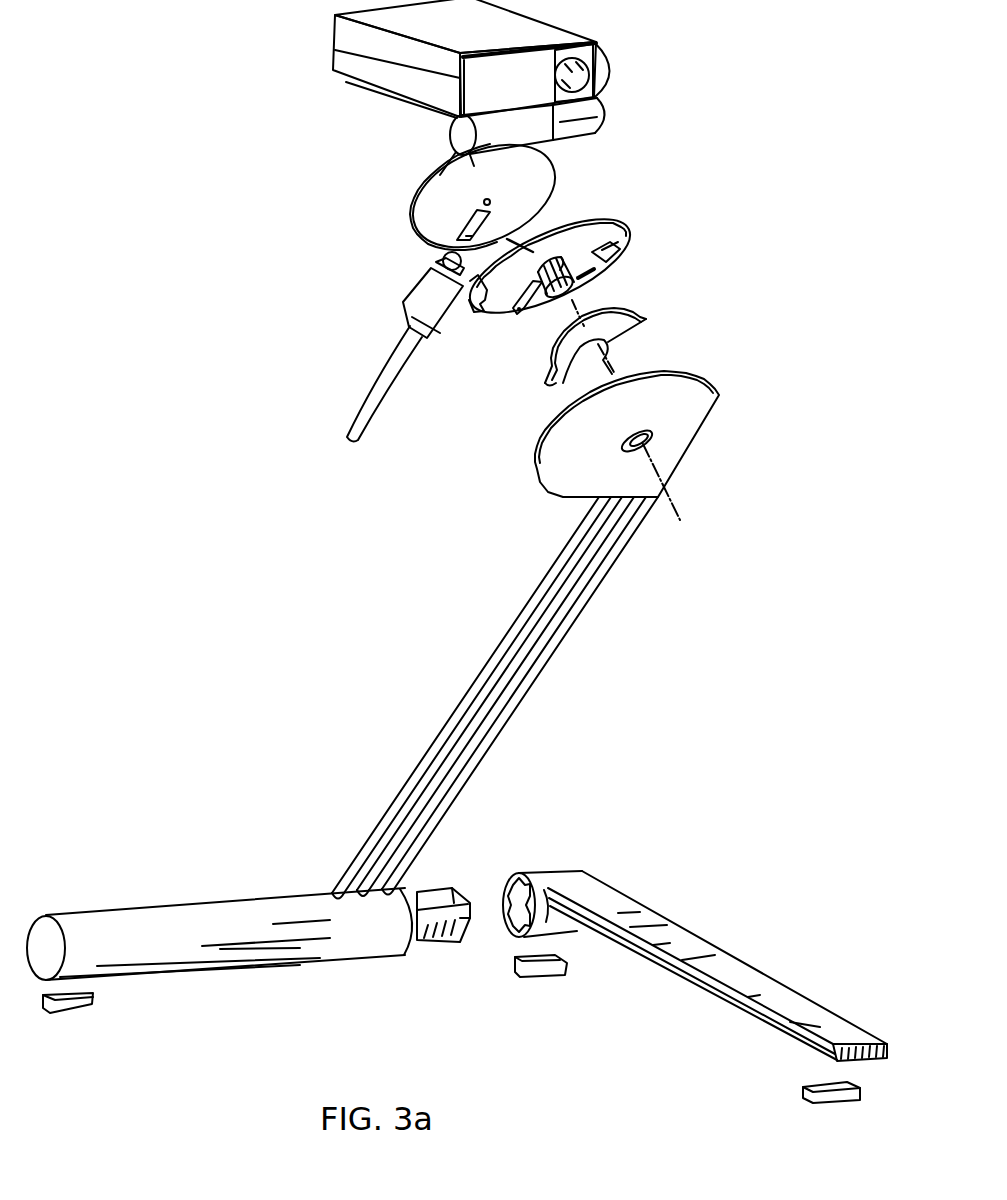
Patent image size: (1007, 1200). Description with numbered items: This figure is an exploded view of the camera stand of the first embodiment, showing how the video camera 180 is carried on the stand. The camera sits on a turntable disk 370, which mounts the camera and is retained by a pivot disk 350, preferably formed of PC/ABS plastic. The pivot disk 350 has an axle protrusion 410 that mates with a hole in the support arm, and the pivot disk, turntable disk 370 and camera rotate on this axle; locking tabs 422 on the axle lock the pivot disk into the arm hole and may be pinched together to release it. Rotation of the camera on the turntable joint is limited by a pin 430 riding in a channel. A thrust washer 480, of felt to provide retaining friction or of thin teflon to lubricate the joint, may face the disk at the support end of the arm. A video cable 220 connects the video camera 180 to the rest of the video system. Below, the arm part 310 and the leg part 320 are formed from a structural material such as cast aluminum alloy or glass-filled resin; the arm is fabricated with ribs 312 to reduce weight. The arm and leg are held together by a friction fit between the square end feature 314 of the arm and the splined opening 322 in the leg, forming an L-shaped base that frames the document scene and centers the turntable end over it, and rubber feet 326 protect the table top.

The video camera 180 is at (484, 42).
The turntable disk 370 is at (527, 188).
The pivot disk 350 is at (591, 255).
The locking tabs 422 is at (507, 239).
The pin 430 is at (618, 245).
The axle protrusion 410 is at (572, 299).
The video cable 220 is at (402, 346).
The thrust washer 480 is at (543, 373).
The ribs 312 is at (495, 698).
The arm part 310 is at (136, 952).
The square end feature 314 is at (460, 927).
The splined opening 322 is at (532, 884).
The leg part 320 is at (717, 966).
The rubber feet 326 is at (73, 1013).